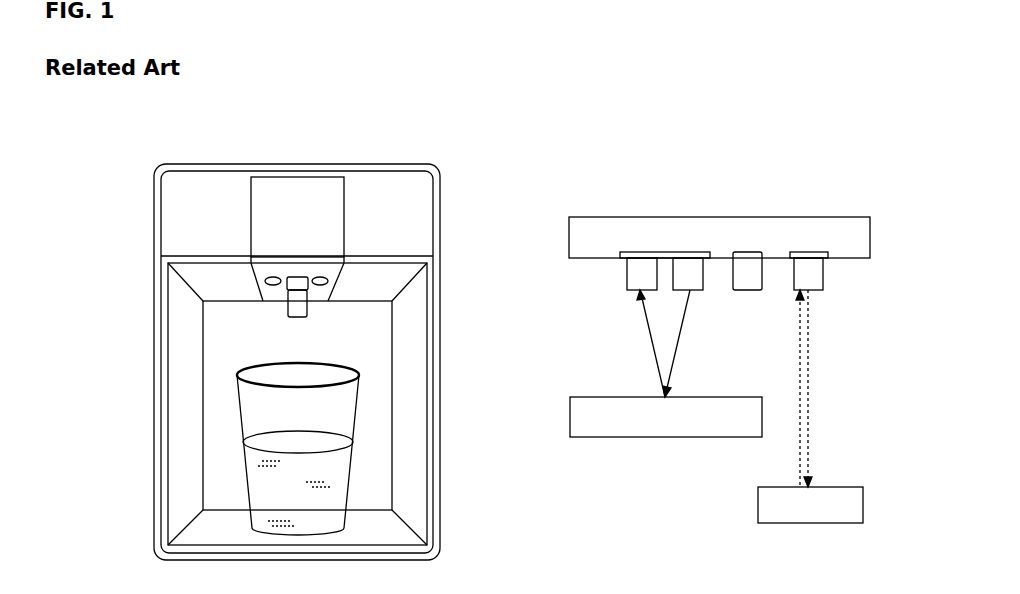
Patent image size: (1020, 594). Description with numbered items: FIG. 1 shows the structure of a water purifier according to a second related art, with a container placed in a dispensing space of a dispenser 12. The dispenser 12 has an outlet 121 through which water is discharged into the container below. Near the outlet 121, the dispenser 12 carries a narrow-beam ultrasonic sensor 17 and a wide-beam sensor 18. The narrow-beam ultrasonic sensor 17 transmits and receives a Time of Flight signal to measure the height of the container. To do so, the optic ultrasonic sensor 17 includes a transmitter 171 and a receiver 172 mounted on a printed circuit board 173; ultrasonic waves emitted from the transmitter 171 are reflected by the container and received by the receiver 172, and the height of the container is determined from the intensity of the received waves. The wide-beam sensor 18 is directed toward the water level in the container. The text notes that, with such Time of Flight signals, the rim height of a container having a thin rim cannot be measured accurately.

The dispenser 12 is at (152, 373).
The outlet 121 is at (288, 313).
The narrow-beam ultrasonic sensor 17 is at (328, 281).
The wide-beam sensor 18 is at (265, 281).
The transmitter 171 is at (690, 268).
The receiver 172 is at (640, 268).
The printed circuit board 173 is at (663, 253).